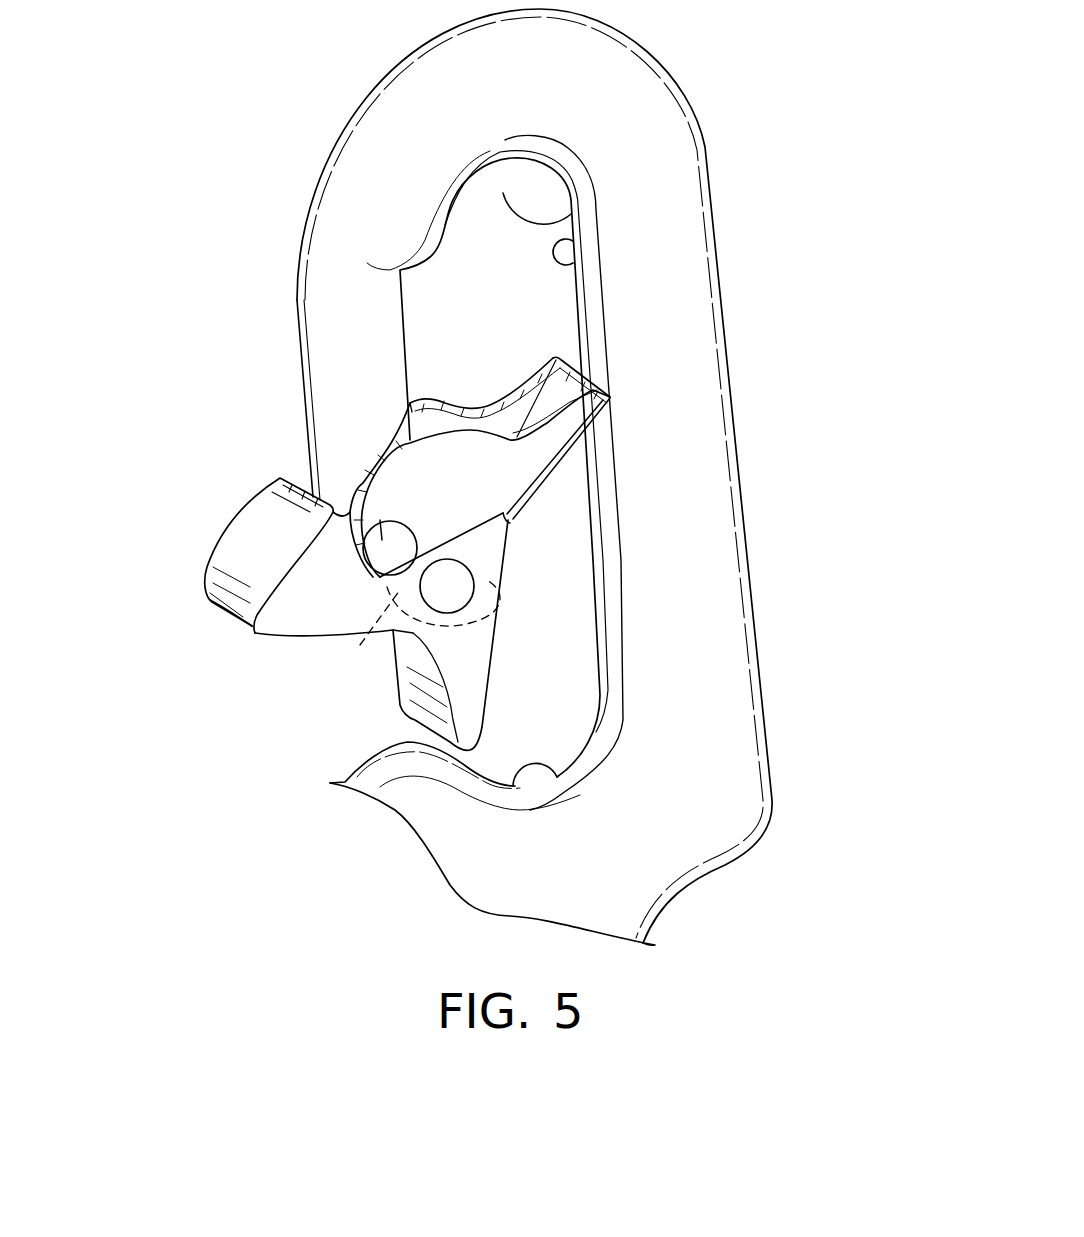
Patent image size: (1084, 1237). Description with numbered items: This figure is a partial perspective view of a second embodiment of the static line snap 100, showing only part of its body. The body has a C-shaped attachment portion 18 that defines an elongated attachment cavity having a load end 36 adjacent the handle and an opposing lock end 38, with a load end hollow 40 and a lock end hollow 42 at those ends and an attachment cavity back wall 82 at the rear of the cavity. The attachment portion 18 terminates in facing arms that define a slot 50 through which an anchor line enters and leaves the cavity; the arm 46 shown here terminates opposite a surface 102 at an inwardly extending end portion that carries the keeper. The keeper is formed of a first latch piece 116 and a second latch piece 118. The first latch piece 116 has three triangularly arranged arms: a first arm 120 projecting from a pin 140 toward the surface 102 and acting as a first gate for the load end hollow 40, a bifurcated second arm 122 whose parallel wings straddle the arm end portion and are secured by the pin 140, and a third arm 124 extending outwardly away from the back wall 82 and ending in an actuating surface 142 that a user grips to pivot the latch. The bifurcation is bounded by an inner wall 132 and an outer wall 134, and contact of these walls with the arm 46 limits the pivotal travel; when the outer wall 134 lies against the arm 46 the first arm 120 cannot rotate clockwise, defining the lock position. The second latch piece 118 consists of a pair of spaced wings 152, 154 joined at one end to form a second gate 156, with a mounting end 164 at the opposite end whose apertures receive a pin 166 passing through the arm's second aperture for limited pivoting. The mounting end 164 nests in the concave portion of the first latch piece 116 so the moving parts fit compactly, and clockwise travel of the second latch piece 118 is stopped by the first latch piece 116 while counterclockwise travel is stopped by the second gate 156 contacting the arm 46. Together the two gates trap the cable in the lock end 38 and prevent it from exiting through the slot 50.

The C-shaped attachment portion 18 is at (755, 567).
The load end 36 is at (556, 785).
The lock end 38 is at (563, 195).
The load end hollow 40 is at (553, 730).
The lock end hollow 42 is at (580, 213).
The arm 46 is at (340, 330).
The slot 50 is at (350, 697).
The attachment cavity back wall 82 is at (580, 267).
The static line snap 100 is at (805, 80).
The surface 102 is at (403, 765).
The first latch piece 116 is at (192, 530).
The second latch piece 118 is at (565, 480).
The first arm 120 is at (465, 722).
The second arm 122 is at (490, 537).
The third arm 124 is at (280, 607).
The inner wall 132 is at (487, 598).
The outer wall 134 is at (367, 636).
The pin 140 is at (455, 600).
The actuating surface 142 is at (258, 540).
The wing 152 is at (487, 496).
The wing 154 is at (425, 403).
The second gate 156 is at (568, 393).
The mounting end 164 is at (394, 515).
The pin 166 is at (380, 527).